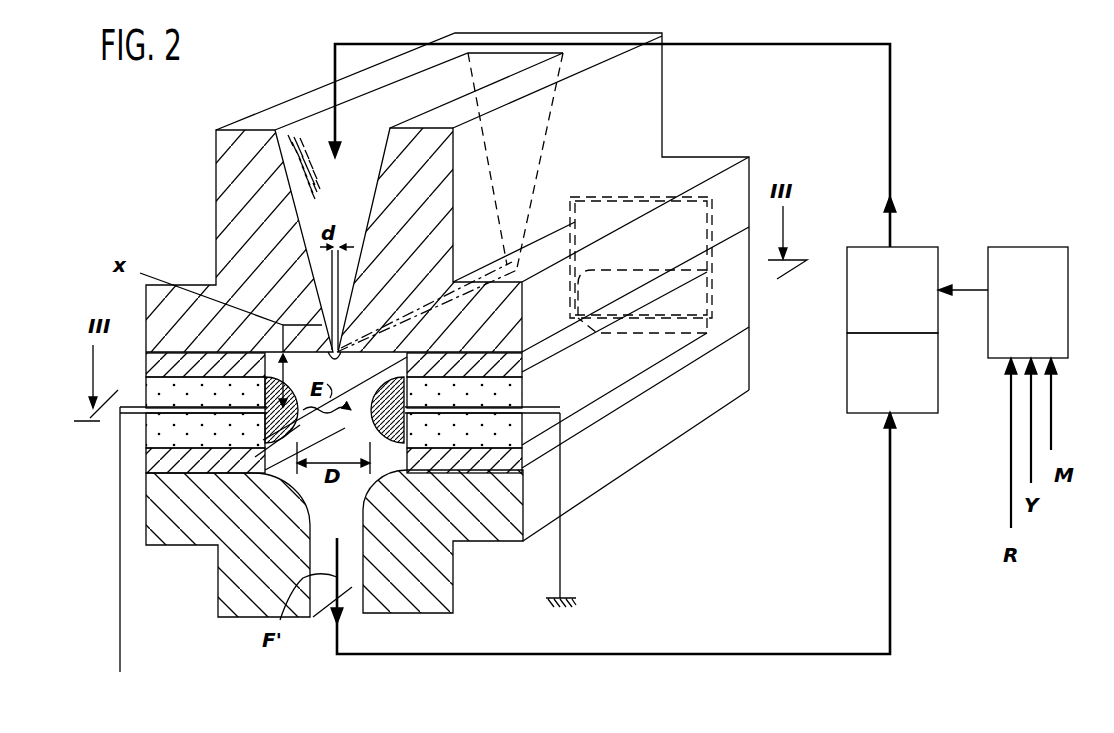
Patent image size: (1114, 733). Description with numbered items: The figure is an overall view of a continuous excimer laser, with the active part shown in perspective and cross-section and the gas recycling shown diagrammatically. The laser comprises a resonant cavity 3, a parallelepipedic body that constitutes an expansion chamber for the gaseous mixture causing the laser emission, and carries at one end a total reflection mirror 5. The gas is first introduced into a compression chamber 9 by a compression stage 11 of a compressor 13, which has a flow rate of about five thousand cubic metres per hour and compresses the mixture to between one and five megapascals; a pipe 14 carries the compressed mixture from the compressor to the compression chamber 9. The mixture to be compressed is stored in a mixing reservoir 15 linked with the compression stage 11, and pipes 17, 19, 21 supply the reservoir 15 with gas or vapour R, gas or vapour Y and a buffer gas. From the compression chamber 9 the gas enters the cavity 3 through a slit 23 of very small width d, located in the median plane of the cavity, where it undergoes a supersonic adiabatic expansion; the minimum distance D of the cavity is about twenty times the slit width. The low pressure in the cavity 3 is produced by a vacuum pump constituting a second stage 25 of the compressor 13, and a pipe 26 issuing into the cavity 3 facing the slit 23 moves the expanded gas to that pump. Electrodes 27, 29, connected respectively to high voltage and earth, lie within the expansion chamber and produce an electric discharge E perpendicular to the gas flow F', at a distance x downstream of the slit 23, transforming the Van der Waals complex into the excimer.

The resonant cavity 3 is at (372, 363).
The total reflection mirror 5 is at (637, 200).
The compression chamber 9 is at (318, 150).
The compression stage 11 is at (892, 290).
The compressor 13 is at (900, 305).
The pipe 14 is at (893, 148).
The mixing reservoir 15 is at (1033, 240).
The pipe 17 is at (1052, 406).
The pipe 19 is at (1033, 445).
The pipe 21 is at (1010, 443).
The slit 23 is at (332, 350).
The second stage 25 is at (892, 373).
The pipe 26 is at (348, 560).
The electrode 27 is at (262, 437).
The electrode 29 is at (392, 430).